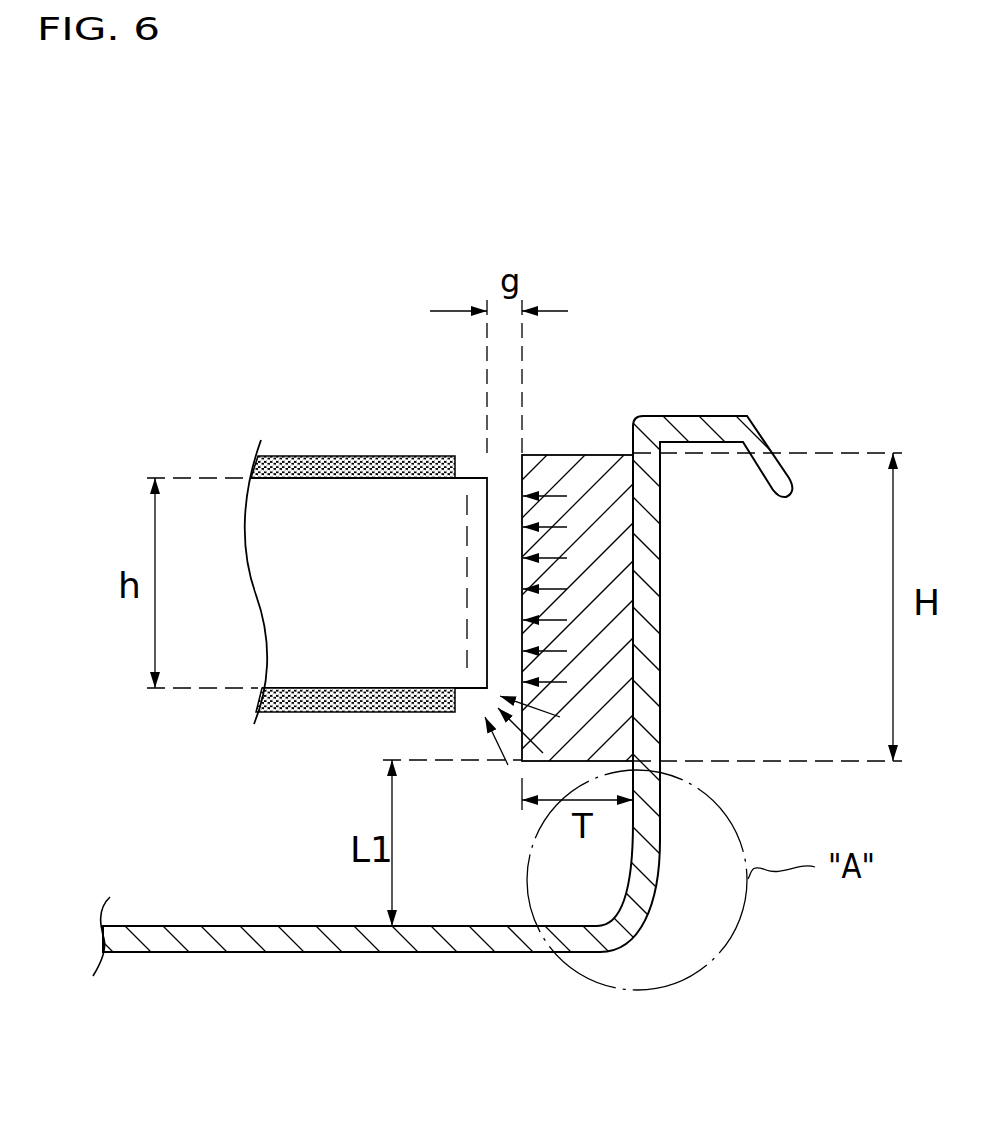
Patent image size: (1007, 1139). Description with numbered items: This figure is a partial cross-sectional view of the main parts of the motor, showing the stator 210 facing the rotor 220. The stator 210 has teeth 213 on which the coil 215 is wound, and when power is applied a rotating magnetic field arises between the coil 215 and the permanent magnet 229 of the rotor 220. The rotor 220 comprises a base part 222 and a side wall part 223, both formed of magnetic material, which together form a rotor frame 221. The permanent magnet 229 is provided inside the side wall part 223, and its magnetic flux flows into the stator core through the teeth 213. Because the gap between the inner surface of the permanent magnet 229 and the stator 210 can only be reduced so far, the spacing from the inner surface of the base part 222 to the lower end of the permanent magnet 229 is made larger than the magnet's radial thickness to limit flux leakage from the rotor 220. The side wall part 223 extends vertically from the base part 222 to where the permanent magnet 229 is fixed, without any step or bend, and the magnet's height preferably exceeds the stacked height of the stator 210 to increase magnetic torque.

The stator 210 is at (332, 568).
The teeth 213 is at (257, 508).
The coil 215 is at (322, 712).
The rotor 220 is at (680, 695).
The rotor frame 221 is at (478, 960).
The base part 222 is at (312, 944).
The side wall part 223 is at (659, 725).
The permanent magnet 229 is at (582, 477).